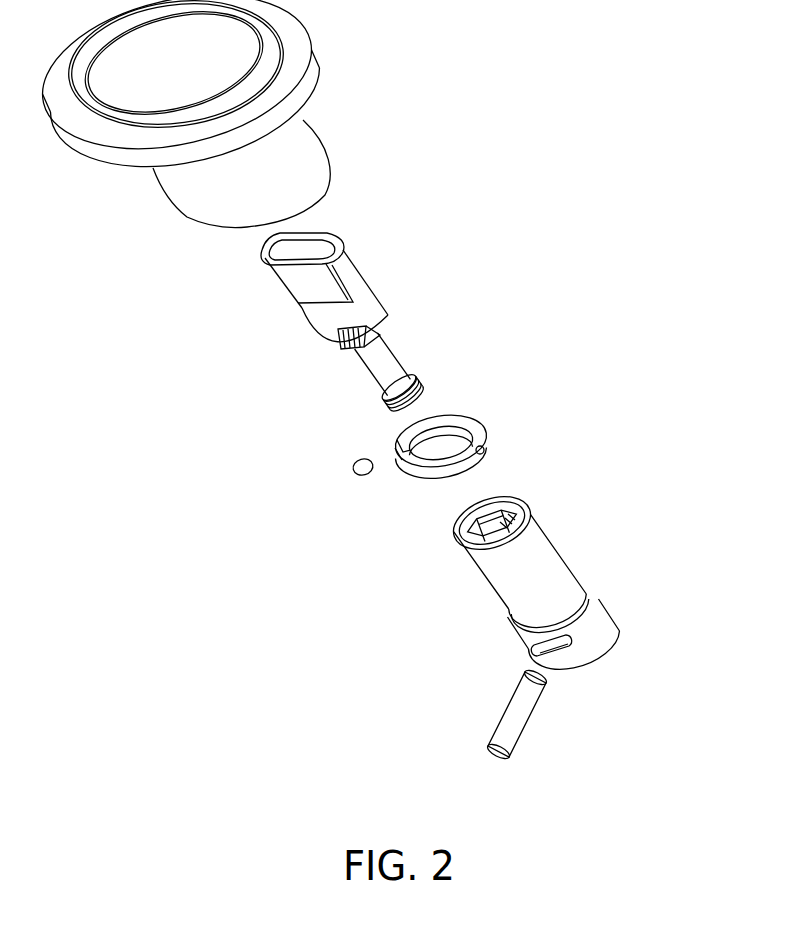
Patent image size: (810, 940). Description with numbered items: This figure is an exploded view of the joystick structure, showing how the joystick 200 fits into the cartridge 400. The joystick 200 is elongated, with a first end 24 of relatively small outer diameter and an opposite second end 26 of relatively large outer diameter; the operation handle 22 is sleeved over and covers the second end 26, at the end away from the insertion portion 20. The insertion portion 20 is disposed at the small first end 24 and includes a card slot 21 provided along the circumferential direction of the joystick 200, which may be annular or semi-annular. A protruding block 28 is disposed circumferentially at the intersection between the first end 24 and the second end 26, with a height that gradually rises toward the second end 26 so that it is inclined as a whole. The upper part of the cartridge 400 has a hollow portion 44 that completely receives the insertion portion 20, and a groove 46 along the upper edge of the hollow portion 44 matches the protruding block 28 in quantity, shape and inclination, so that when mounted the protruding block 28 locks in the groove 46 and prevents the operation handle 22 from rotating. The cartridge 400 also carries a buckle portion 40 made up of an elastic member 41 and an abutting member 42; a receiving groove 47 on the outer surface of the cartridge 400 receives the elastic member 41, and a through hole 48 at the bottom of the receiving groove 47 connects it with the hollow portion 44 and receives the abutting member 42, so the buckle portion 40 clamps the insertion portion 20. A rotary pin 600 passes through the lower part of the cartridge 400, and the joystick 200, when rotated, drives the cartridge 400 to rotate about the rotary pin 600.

The joystick 200 is at (276, 114).
The operation handle 22 is at (283, 56).
The insertion portion 20 is at (383, 331).
The second end 26 is at (362, 262).
The protruding block 28 is at (352, 345).
The first end 24 is at (397, 353).
The card slot 21 is at (419, 391).
The buckle portion 40 is at (442, 446).
The elastic member 41 is at (463, 417).
The abutting member 42 is at (352, 465).
The cartridge 400 is at (583, 570).
The hollow portion 44 is at (507, 517).
The groove 46 is at (455, 530).
The through hole 48 is at (582, 592).
The receiving groove 47 is at (512, 637).
The rotary pin 600 is at (488, 734).